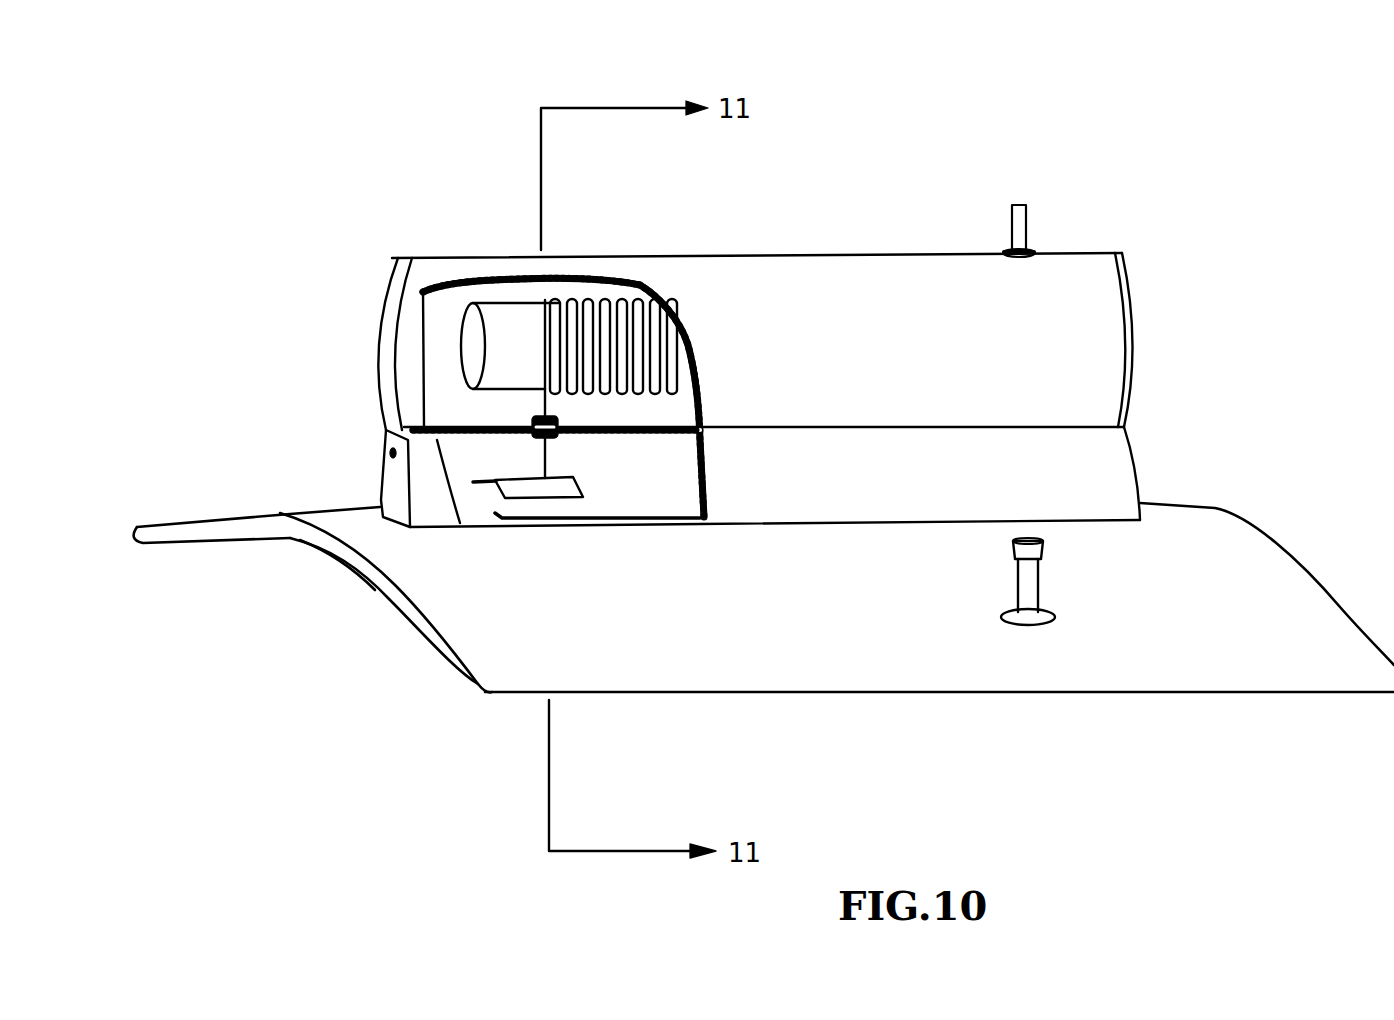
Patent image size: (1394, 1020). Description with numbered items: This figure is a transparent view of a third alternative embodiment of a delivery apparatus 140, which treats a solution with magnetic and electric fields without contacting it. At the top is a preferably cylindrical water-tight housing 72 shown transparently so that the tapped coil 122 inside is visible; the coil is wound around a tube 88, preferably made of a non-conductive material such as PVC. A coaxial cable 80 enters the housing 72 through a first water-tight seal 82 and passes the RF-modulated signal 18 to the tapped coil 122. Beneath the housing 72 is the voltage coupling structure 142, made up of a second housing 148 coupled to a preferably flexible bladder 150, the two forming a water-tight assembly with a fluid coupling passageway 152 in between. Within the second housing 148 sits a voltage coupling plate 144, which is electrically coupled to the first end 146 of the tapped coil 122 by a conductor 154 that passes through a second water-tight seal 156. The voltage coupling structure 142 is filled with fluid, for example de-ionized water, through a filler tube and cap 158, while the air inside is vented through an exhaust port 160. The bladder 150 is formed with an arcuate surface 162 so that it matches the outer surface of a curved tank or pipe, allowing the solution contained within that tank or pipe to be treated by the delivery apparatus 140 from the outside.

The delivery apparatus 140 is at (245, 132).
The voltage coupling structure 142 is at (222, 412).
The water-tight housing 72 is at (882, 255).
The second housing 148 is at (1117, 468).
The exhaust port 160 is at (386, 441).
The first end of the tapped coil 146 is at (488, 305).
The fluid coupling passageway 152 is at (661, 524).
The tube 88 is at (516, 300).
The tapped coil 122 is at (612, 290).
The conductor 154 is at (552, 409).
The second water-tight seal 156 is at (538, 436).
The voltage coupling plate 144 is at (563, 498).
The RF-modulated signal 18 is at (1019, 203).
The coaxial cable 80 is at (1010, 224).
The first water-tight seal 82 is at (1035, 250).
The bladder 150 is at (192, 546).
The arcuate surface 162 is at (328, 556).
The filler tube and cap 158 is at (1040, 594).